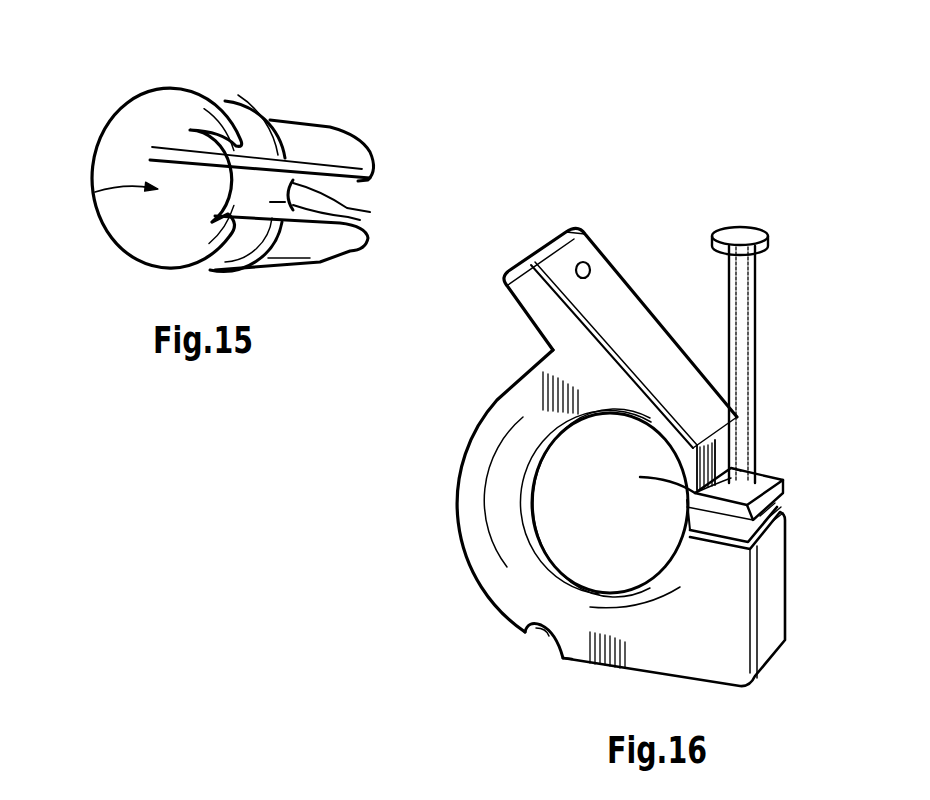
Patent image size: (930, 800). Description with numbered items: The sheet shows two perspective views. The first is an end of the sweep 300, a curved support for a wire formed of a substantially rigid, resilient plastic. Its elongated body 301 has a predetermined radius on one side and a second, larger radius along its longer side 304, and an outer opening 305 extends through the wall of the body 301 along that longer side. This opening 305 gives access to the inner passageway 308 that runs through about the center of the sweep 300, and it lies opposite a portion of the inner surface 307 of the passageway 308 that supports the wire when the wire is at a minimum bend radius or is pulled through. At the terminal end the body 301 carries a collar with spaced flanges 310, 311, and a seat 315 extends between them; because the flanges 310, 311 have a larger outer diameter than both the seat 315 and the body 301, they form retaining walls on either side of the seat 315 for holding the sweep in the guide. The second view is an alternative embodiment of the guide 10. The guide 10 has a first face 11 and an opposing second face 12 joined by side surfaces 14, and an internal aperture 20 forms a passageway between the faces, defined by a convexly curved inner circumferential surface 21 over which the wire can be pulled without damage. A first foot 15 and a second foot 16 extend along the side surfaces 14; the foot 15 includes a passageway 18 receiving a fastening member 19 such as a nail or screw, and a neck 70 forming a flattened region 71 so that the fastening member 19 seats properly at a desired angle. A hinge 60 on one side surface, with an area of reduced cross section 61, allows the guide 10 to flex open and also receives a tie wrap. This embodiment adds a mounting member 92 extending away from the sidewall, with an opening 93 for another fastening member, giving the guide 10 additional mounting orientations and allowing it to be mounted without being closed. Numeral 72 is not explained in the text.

In FIG. 15, the sweep 300 is at (255, 149).
In FIG. 15, the flange 310 is at (205, 90).
In FIG. 15, the flange 311 is at (265, 110).
In FIG. 15, the seat 315 is at (242, 105).
In FIG. 15, the second, longer side 304 is at (375, 158).
In FIG. 15, the outer opening 305 is at (362, 199).
In FIG. 15, the inner surface 307 is at (362, 209).
In FIG. 15, the elongated body 301 is at (360, 238).
In FIG. 15, the inner passageway 308 is at (95, 193).
In FIG. 16, the guide 10 is at (602, 439).
In FIG. 16, the first face 11 is at (518, 398).
In FIG. 16, the second face 12 is at (693, 363).
In FIG. 16, the side surfaces 14 is at (777, 590).
In FIG. 16, the foot 15 is at (663, 333).
In FIG. 16, the second foot 16 is at (700, 688).
In FIG. 16, the passageway 18 is at (772, 466).
In FIG. 16, the fastening member 19 is at (768, 240).
In FIG. 16, the internal aperture 20 is at (608, 548).
In FIG. 16, the inner circumferential surface 21 is at (518, 523).
In FIG. 16, the hinge 60 is at (530, 641).
In FIG. 16, the area of reduced cross section 61 is at (550, 641).
In FIG. 16, the neck 70 is at (772, 435).
In FIG. 16, the flattened region 71 is at (783, 473).
In FIG. 16, the arm end 72 is at (700, 480).
In FIG. 16, the mounting member 92 is at (597, 225).
In FIG. 16, the opening 93 is at (591, 268).